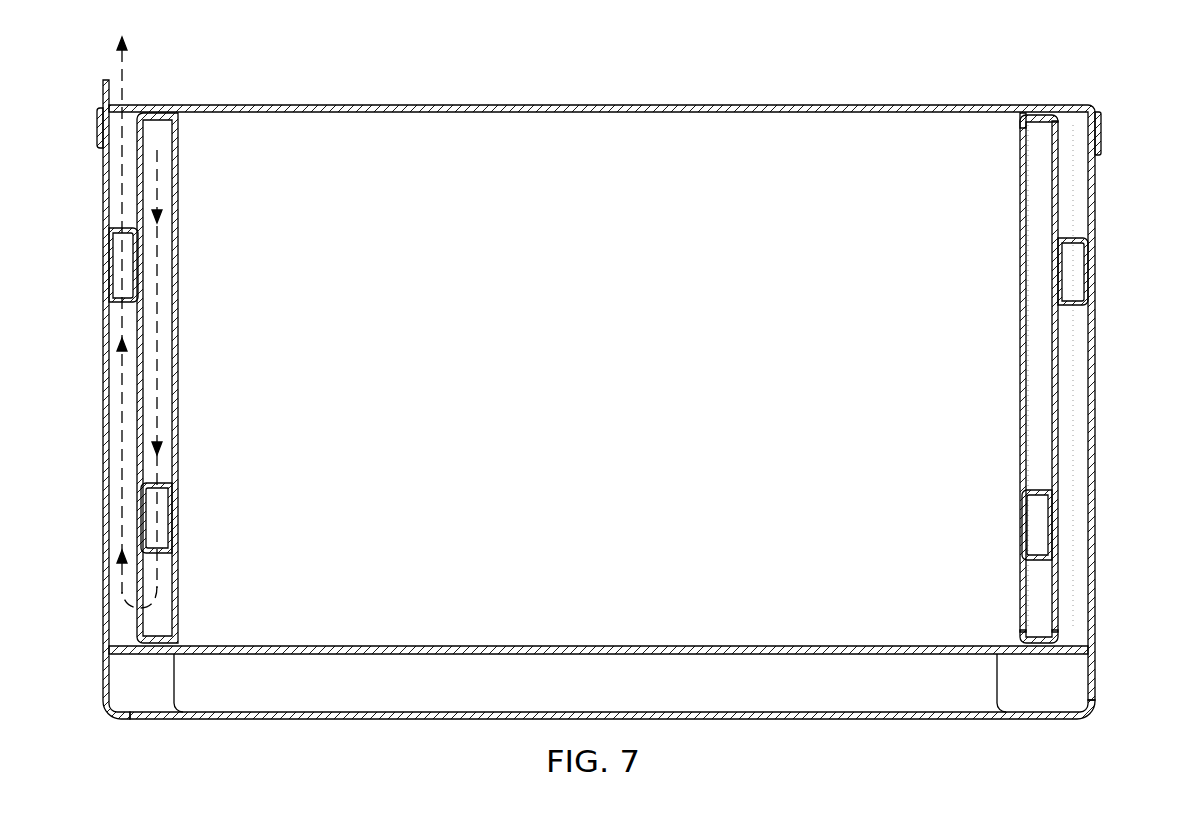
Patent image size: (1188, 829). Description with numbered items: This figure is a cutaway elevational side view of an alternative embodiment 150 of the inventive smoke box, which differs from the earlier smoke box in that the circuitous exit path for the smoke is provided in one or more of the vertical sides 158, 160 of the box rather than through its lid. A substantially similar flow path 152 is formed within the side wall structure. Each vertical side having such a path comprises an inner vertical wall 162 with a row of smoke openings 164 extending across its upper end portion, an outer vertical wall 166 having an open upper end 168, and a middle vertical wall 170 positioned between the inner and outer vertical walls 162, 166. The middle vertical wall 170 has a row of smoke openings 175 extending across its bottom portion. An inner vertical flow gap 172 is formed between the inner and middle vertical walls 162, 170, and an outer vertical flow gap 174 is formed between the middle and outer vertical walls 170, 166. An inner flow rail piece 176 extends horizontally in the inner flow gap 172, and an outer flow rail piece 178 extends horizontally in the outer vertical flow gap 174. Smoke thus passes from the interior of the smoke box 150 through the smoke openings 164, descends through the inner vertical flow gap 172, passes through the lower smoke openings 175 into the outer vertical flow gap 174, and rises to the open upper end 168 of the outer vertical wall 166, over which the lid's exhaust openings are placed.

The alternative embodiment of the smoke box 150 is at (348, 66).
The flow path 152 is at (123, 80).
The vertical side 158 is at (105, 197).
The vertical side 160 is at (1090, 554).
The inner vertical wall 162 is at (1019, 340).
The smoke openings 164 is at (1010, 156).
The outer vertical wall 166 is at (1090, 492).
The open upper end 168 is at (1080, 104).
The middle vertical wall 170 is at (1050, 402).
The inner vertical flow gap 172 is at (1036, 234).
The outer vertical flow gap 174 is at (1078, 378).
The smoke openings 175 is at (1040, 608).
The inner flow rail piece 176 is at (1028, 474).
The outer flow rail piece 178 is at (1084, 236).